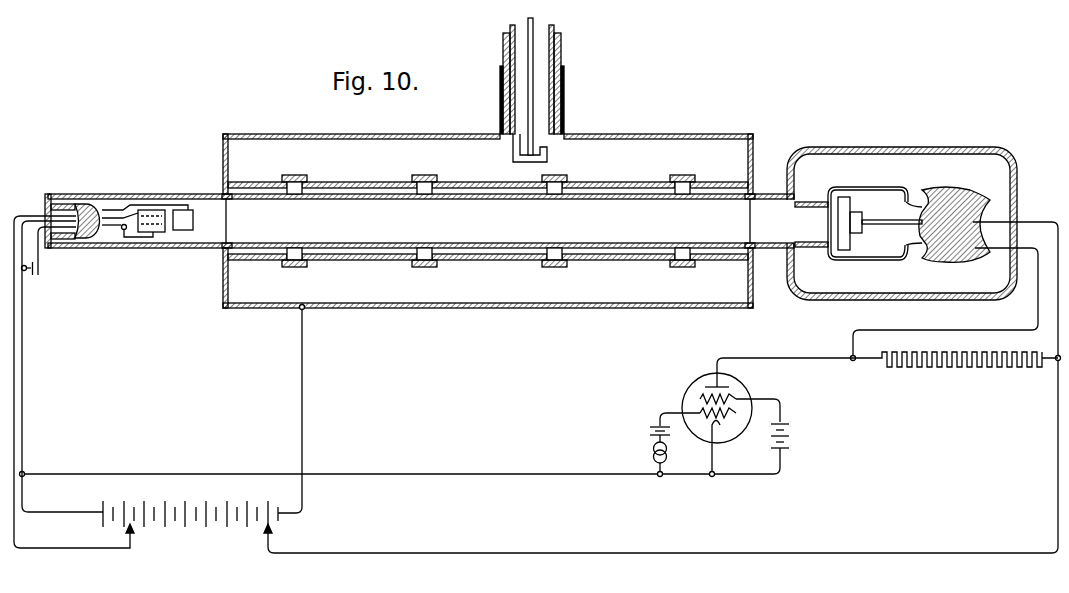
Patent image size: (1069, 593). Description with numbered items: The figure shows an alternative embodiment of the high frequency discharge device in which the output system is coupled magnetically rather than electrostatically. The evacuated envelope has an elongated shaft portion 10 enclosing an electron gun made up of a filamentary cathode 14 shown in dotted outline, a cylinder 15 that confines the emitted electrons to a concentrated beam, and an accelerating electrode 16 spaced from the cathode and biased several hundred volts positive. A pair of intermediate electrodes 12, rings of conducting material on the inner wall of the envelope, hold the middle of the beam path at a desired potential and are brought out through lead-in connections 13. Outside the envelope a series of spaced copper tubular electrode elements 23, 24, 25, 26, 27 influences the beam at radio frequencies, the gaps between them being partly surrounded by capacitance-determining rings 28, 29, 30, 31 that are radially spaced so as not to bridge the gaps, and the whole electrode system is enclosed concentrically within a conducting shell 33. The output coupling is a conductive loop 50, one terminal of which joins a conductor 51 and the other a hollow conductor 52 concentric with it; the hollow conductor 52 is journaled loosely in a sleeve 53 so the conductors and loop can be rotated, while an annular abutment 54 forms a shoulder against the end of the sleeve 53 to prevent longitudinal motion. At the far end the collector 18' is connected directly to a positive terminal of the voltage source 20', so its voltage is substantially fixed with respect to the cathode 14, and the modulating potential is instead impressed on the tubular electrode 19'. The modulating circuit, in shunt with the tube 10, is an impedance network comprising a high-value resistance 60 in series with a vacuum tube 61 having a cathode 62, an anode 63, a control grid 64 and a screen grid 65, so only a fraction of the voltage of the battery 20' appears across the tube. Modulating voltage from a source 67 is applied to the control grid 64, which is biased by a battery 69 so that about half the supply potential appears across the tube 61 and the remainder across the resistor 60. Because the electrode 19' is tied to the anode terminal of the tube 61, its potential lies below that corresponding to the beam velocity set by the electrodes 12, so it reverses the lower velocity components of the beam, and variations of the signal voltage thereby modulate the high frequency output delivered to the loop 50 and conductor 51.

The shaft portion 10 is at (112, 247).
The intermediate electrodes 12 is at (227, 217).
The lead-in connections 13 is at (223, 249).
The filamentary cathode 14 is at (162, 232).
The cylinder 15 is at (152, 210).
The accelerating electrode 16 is at (188, 210).
The collector 18' is at (875, 214).
The tubular electrode 19' is at (811, 211).
The voltage source 20' is at (204, 432).
The tubular electrode element 23 is at (250, 178).
The tubular electrode element 24 is at (351, 182).
The tubular electrode element 25 is at (470, 177).
The tubular electrode element 26 is at (612, 182).
The tubular electrode element 27 is at (720, 179).
The capacitance-determining ring 28 is at (294, 267).
The capacitance-determining ring 29 is at (424, 267).
The capacitance-determining ring 30 is at (554, 267).
The capacitance-determining ring 31 is at (682, 267).
The conducting shell 33 is at (371, 134).
The conductive loop 50 is at (547, 154).
The conductor 51 is at (533, 21).
The hollow conductor 52 is at (510, 30).
The sleeve 53 is at (564, 92).
The annular abutment 54 is at (561, 48).
The resistance 60 is at (948, 367).
The vacuum tube 61 is at (700, 378).
The cathode 62 is at (717, 432).
The anode 63 is at (723, 385).
The control grid 64 is at (728, 423).
The screen grid 65 is at (702, 399).
The source 67 is at (653, 453).
The battery 69 is at (650, 428).